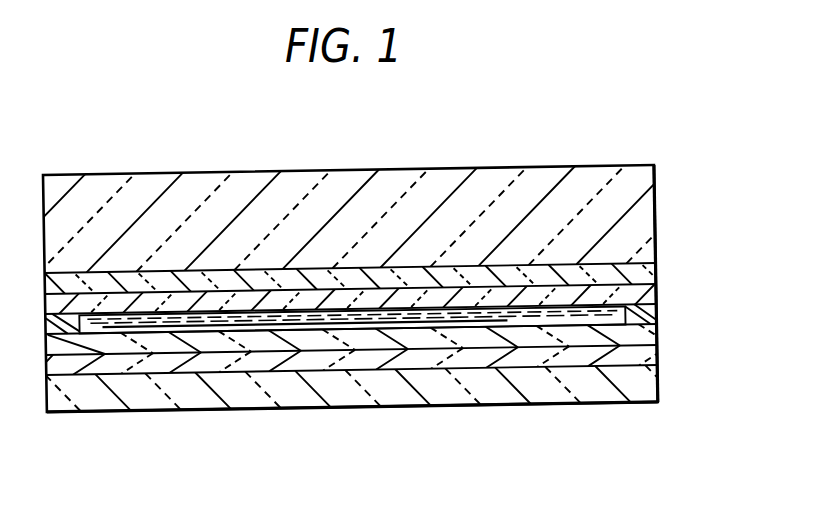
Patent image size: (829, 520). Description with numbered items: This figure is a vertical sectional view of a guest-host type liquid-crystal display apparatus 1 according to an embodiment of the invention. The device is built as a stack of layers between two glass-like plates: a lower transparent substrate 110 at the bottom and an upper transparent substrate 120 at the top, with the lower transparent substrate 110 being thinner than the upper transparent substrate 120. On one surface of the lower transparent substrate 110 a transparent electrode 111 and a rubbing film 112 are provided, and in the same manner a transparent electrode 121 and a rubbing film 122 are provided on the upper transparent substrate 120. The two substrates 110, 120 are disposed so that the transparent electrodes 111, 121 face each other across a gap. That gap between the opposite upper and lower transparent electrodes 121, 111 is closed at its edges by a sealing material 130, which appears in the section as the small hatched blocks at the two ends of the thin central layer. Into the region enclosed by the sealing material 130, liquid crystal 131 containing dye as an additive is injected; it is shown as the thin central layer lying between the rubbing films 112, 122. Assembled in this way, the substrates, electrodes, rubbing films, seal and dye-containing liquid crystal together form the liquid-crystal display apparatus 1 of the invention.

The liquid-crystal display apparatus 1 is at (727, 160).
The lower transparent substrate 110 is at (655, 382).
The transparent electrode 111 is at (655, 357).
The rubbing film 112 is at (655, 336).
The upper transparent substrate 120 is at (655, 192).
The transparent electrode 121 is at (655, 266).
The rubbing film 122 is at (655, 290).
The sealing material 130 is at (655, 314).
The liquid crystal 131 is at (364, 323).